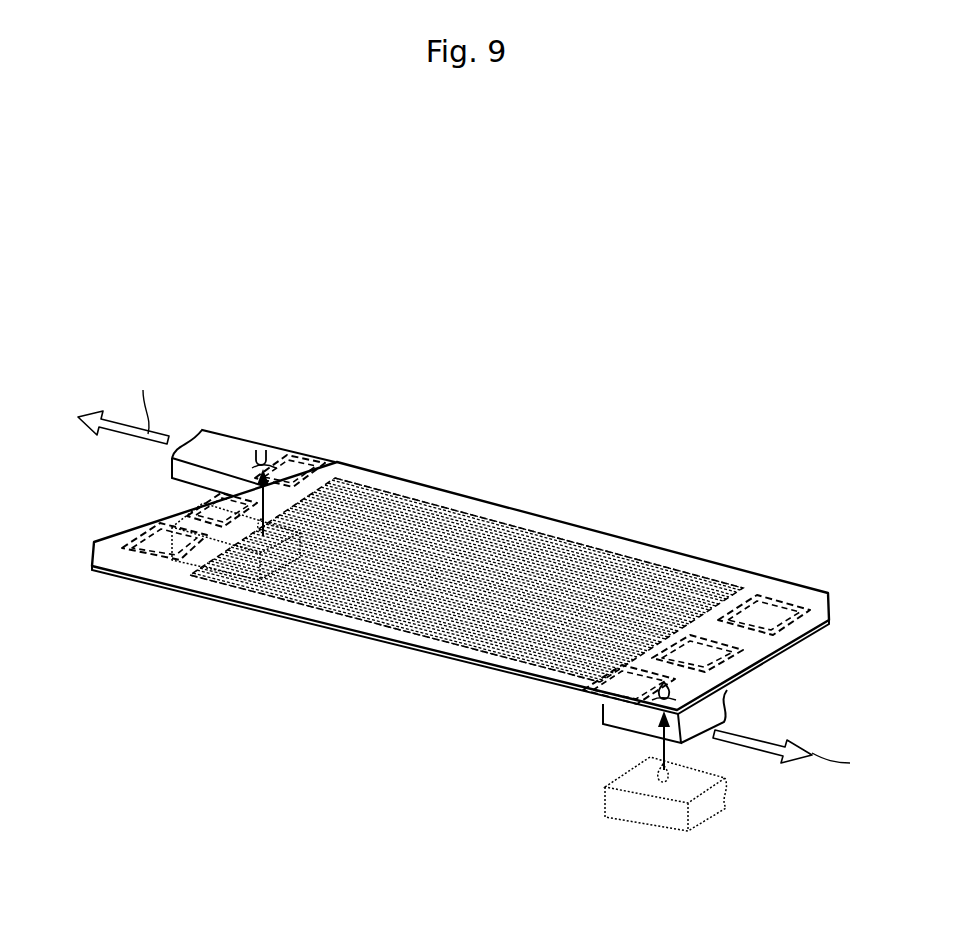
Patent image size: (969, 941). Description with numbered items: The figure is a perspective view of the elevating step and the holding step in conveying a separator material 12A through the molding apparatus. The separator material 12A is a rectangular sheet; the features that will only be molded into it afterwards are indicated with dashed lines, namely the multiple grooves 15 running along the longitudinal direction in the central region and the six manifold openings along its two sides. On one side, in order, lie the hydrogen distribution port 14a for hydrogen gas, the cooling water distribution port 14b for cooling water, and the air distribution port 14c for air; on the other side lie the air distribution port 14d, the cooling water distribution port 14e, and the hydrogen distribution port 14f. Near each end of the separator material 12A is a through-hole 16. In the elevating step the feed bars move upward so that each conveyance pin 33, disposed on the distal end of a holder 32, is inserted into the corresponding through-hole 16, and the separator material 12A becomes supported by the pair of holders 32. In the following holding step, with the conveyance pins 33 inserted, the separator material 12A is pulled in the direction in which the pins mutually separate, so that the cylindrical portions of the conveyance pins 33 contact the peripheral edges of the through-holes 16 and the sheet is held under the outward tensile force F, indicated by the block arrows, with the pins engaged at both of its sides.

The separator material 12A is at (614, 521).
The hydrogen distribution port 14a is at (333, 462).
The cooling water distribution port 14b is at (225, 488).
The air distribution port 14c is at (160, 528).
The air distribution port 14d is at (790, 605).
The cooling water distribution port 14e is at (740, 647).
The hydrogen distribution port 14f is at (600, 678).
The grooves 15 is at (515, 537).
The through-hole 16 is at (266, 454).
The holder 32 is at (222, 448).
The conveyance pin 33 is at (263, 450).